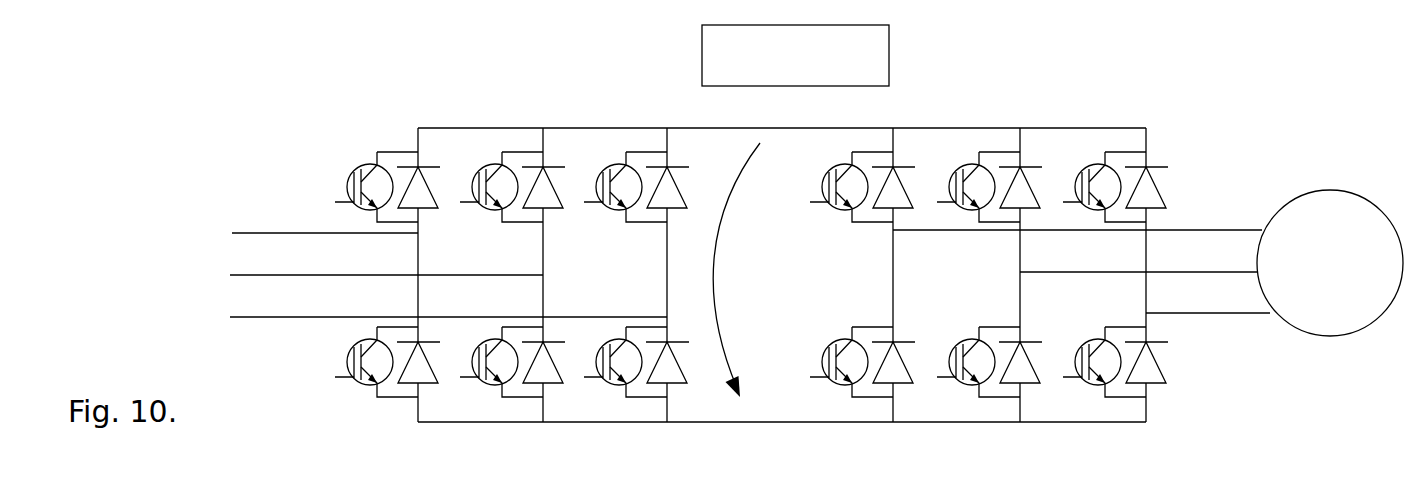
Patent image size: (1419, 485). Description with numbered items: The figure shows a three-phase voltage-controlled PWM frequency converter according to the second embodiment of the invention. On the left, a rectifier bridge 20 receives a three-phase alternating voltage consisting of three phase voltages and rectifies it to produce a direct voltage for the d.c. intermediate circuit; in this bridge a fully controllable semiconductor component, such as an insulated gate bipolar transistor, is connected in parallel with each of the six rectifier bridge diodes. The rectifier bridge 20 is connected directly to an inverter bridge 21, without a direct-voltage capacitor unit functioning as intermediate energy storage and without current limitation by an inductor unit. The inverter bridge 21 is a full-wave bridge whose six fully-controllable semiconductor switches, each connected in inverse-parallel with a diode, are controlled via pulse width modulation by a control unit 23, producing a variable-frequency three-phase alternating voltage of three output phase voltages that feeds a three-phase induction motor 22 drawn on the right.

The rectifier bridge 20 is at (558, 104).
The inverter bridge 21 is at (1078, 104).
The three-phase induction motor 22 is at (1345, 177).
The control unit 23 is at (930, 44).